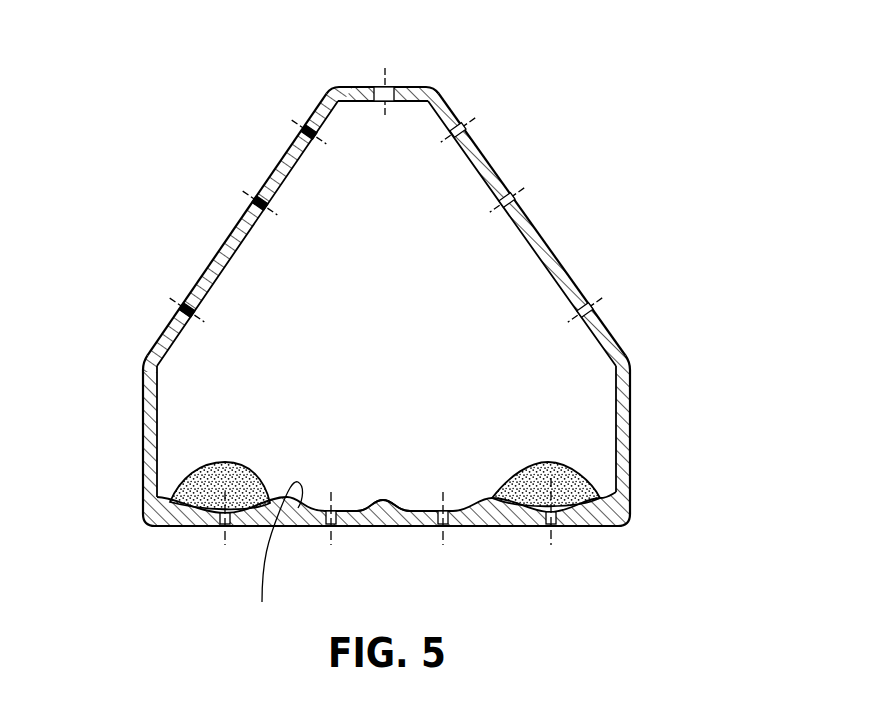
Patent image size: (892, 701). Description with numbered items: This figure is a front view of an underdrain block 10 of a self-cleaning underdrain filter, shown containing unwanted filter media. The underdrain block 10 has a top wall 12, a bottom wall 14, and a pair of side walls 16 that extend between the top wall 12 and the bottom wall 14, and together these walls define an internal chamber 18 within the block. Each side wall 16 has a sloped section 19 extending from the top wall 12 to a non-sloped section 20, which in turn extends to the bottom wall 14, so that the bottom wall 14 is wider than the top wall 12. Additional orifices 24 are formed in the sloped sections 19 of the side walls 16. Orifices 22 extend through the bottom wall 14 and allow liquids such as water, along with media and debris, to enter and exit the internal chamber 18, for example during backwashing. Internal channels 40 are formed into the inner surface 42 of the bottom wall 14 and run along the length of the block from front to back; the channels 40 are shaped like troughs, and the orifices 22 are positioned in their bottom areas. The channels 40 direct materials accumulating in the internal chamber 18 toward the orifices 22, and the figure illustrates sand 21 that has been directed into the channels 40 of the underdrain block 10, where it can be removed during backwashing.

The underdrain block 10 is at (647, 85).
The top wall 12 is at (423, 77).
The bottom wall 14 is at (568, 542).
The side walls 16 is at (131, 364).
The internal chamber 18 is at (370, 350).
The sloped section 19 is at (216, 256).
The non-sloped section 20 is at (142, 430).
The sand 21 is at (236, 462).
The orifices 22 is at (225, 530).
The additional orifices 24 is at (380, 88).
The internal channels 40 is at (270, 558).
The inner surface 42 is at (383, 500).